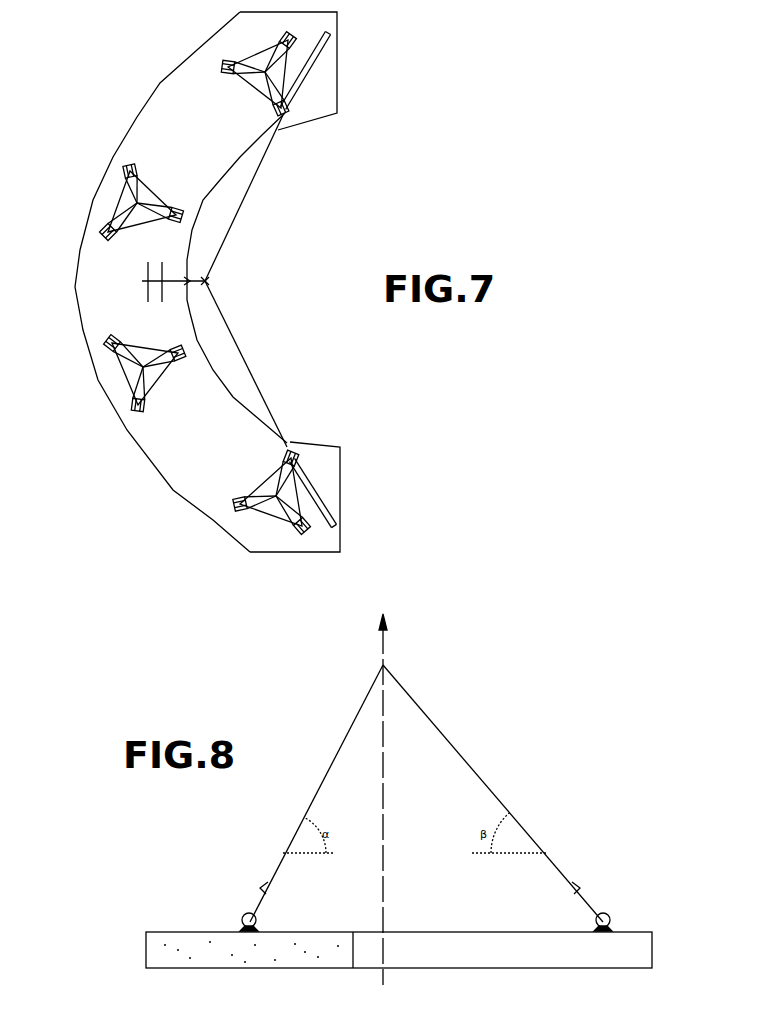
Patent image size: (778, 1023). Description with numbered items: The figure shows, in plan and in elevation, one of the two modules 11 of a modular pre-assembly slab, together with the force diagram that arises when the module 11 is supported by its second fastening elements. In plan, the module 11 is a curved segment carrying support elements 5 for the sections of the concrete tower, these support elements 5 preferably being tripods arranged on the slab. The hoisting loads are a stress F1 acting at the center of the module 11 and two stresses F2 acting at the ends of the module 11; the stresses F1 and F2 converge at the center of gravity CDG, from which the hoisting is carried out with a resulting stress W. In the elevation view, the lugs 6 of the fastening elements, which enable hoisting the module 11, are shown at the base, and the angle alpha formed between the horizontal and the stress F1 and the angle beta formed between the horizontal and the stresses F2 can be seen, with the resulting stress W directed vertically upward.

In FIG. 7, the module 11 is at (177, 115).
In FIG. 8, the module 11 is at (146, 947).
In FIG. 7, the support element 5 is at (140, 202).
In FIG. 8, the lug 6 is at (244, 914).
In FIG. 7, the stress F1 is at (174, 282).
In FIG. 8, the stress F1 is at (275, 890).
In FIG. 7, the stress F2 is at (278, 283).
In FIG. 8, the stress F2 is at (544, 890).
In FIG. 7, the center of gravity CDG is at (244, 281).
In FIG. 8, the resulting stress W is at (381, 792).